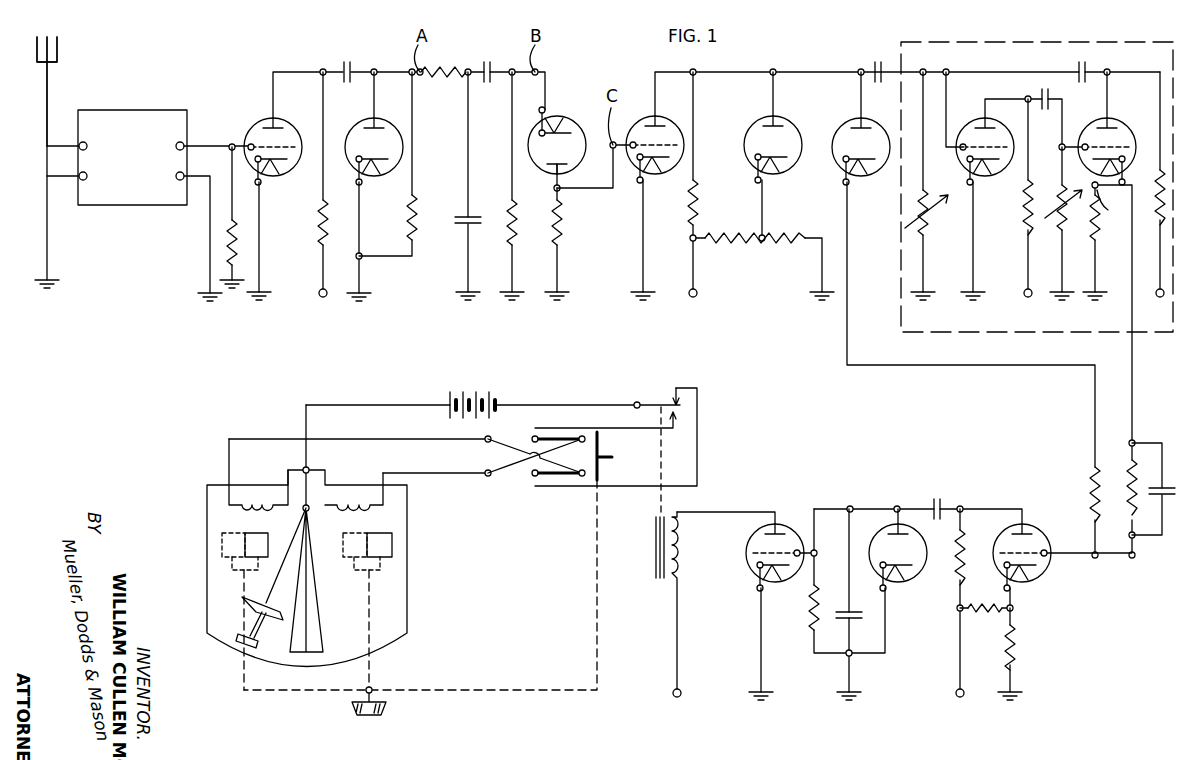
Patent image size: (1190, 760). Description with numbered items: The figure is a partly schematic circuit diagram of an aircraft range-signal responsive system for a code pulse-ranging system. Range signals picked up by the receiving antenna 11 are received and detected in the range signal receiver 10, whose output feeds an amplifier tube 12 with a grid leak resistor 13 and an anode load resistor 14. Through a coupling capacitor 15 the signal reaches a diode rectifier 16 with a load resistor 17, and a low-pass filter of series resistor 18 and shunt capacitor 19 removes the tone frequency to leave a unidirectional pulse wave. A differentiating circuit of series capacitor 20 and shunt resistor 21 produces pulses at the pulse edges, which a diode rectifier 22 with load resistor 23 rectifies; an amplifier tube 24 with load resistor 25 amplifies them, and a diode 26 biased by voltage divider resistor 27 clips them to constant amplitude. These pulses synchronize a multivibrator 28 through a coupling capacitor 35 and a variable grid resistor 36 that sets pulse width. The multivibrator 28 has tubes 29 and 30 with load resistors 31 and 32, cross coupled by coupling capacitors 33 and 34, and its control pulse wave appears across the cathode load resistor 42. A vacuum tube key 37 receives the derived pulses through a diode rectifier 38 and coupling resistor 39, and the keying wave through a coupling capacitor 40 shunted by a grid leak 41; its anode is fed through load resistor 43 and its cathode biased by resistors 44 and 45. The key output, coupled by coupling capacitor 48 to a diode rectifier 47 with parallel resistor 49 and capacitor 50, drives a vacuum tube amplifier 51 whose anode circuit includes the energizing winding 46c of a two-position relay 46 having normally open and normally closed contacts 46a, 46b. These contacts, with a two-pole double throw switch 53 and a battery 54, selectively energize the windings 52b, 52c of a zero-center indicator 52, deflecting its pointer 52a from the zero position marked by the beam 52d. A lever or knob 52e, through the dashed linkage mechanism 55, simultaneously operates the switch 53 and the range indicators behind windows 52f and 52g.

The range signal receiver 10 is at (125, 112).
The receiving antenna 11 is at (47, 150).
The amplifier tube 12 is at (262, 130).
The grid leak resistor 13 is at (237, 240).
The load resistor 14 is at (318, 218).
The coupling capacitor 15 is at (352, 62).
The diode rectifier 16 is at (363, 130).
The load resistor 17 is at (409, 218).
The series resistor 18 is at (448, 68).
The shunt capacitor 19 is at (458, 216).
The series capacitor 20 is at (492, 64).
The shunt resistor 21 is at (508, 218).
The diode rectifier 22 is at (537, 130).
The load resistor 23 is at (554, 218).
The amplifier tube 24 is at (645, 130).
The load resistor 25 is at (688, 215).
The diode 26 is at (760, 130).
The voltage divider resistor 27 is at (740, 233).
The multivibrator 28 is at (1017, 42).
The vacuum tube 29 is at (972, 130).
The vacuum tube 30 is at (1094, 130).
The load resistor 31 is at (1024, 212).
The load resistor 32 is at (1155, 220).
The coupling capacitor 33 is at (1086, 65).
The coupling capacitor 34 is at (1052, 88).
The coupling capacitor 35 is at (884, 63).
The variable grid resistor 36 is at (930, 214).
The vacuum tube key 37 is at (1002, 537).
The diode rectifier 38 is at (848, 130).
The coupling resistor 39 is at (1088, 503).
The coupling capacitor 40 is at (1156, 482).
The grid leak 41 is at (1120, 488).
The cathode load resistor 42 is at (1090, 226).
The load resistor 43 is at (958, 580).
The resistor 44 is at (1015, 650).
The resistor 45 is at (1000, 603).
The two-position relay 46 is at (671, 563).
The normally open contact 46a is at (684, 418).
The normally closed contact 46b is at (672, 400).
The energizing winding 46c is at (680, 552).
The diode rectifier 47 is at (880, 535).
The coupling capacitor 48 is at (932, 500).
The resistor 49 is at (810, 617).
The capacitor 50 is at (849, 612).
The vacuum tube amplifier 51 is at (750, 540).
The zero-center indicator 52 is at (207, 505).
The pointer 52a is at (247, 645).
The winding 52b is at (380, 492).
The winding 52c is at (275, 492).
The beam representation 52d is at (314, 660).
The lever or knob 52e is at (372, 696).
The window 52f is at (242, 560).
The window 52g is at (370, 565).
The two-pole double throw switch 53 is at (575, 432).
The battery 54 is at (492, 393).
The linkage mechanism 55 is at (597, 632).